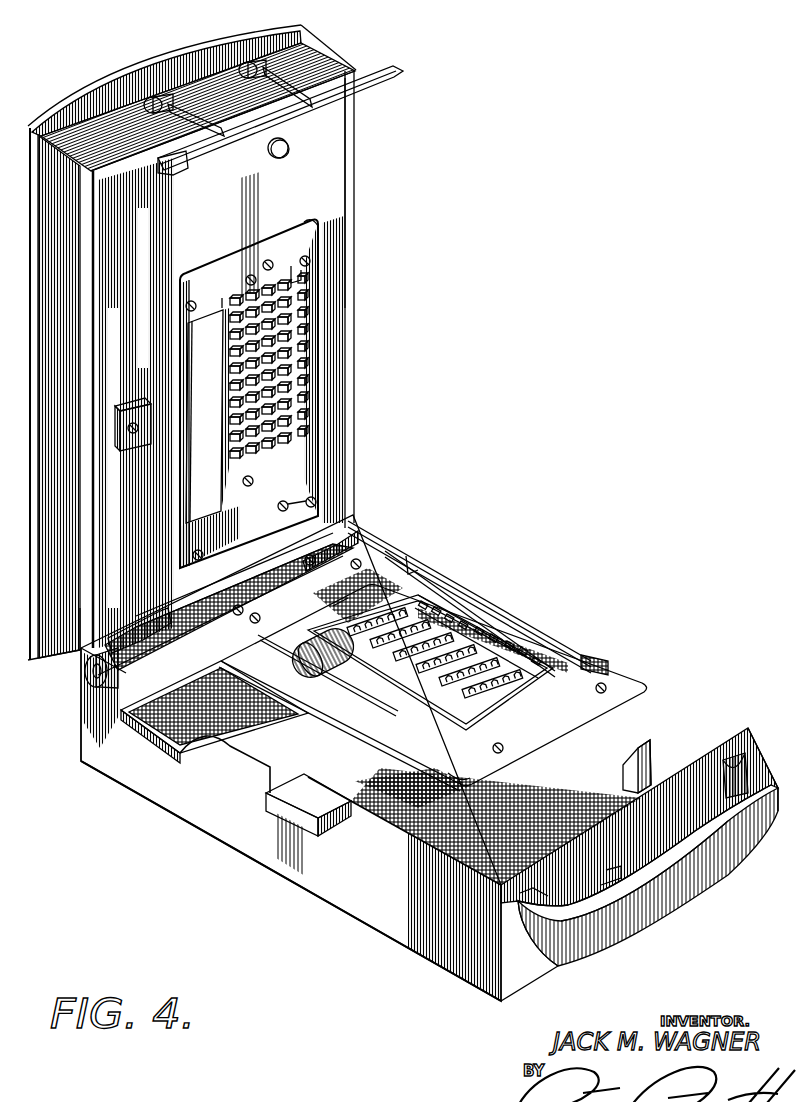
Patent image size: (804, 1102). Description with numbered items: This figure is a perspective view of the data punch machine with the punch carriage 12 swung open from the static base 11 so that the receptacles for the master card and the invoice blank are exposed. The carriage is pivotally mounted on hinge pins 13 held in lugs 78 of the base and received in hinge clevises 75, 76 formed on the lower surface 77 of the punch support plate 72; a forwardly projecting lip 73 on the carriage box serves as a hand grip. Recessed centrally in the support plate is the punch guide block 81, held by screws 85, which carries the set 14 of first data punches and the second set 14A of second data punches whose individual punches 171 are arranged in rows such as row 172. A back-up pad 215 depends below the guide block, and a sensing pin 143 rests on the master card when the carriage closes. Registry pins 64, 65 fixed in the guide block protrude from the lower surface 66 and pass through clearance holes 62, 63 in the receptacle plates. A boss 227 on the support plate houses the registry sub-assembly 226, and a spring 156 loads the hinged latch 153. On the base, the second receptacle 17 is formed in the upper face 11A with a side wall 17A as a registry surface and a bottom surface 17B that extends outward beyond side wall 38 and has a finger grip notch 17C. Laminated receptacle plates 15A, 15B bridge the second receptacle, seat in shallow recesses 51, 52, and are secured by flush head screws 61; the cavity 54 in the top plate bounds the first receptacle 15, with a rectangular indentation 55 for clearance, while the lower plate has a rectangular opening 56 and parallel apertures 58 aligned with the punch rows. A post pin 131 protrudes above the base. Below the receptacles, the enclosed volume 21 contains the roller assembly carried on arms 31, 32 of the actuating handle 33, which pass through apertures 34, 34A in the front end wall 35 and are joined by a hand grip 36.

The static base 11 is at (365, 890).
The upper face of the static base 11A is at (633, 692).
The punch carriage 12 is at (322, 124).
The hinge pins 13 is at (75, 677).
The set of first data punches 14 is at (234, 282).
The second set of second data punches 14A is at (304, 210).
The first receptacle 15 is at (361, 590).
The top receptacle plate 15A is at (563, 667).
The lower receptacle plate 15B is at (398, 580).
The second receptacle 17 is at (200, 700).
The side wall 17A is at (497, 598).
The bottom surface 17B is at (314, 731).
The finger grip notch 17C is at (227, 738).
The enclosed volume 21 is at (430, 712).
The arm 31 is at (546, 895).
The arm 32 is at (752, 777).
The actuating handle 33 is at (648, 877).
The aperture 34 is at (522, 884).
The aperture 34A is at (712, 760).
The front end wall 35 is at (523, 960).
The hand grip 36 is at (670, 905).
The side wall of the base 38 is at (380, 918).
The shallow recess 51 is at (405, 775).
The shallow recess 52 is at (205, 638).
The cavity 54 is at (280, 608).
The rectangular indentation 55 is at (436, 598).
The rectangular opening 56 is at (383, 665).
The parallel rectangular apertures 58 is at (450, 654).
The flush head screws 61 is at (598, 677).
The clearance hole 62 is at (248, 605).
The clearance hole 63 is at (330, 595).
The registry pin 64 is at (307, 491).
The registry pin 65 is at (194, 543).
The lower surface of punch carriage 66 is at (318, 301).
The punch support plate 72 is at (218, 179).
The forwardly projecting lip 73 is at (113, 62).
The hinge clevis 75 is at (87, 635).
The hinge clevis 76 is at (282, 551).
The lower surface of support plate 77 is at (322, 161).
The lugs 78 is at (313, 537).
The punch guide block 81 is at (209, 283).
The screws 85 is at (183, 292).
The post pin 131 is at (614, 766).
The sensing pin 143 is at (259, 252).
The hinged latch 153 is at (396, 67).
The spring 156 is at (298, 682).
The individual punches 171 is at (304, 390).
The row of punches 172 is at (294, 250).
The back-up pad 215 is at (203, 490).
The registry sub-assembly 226 is at (132, 427).
The boss 227 is at (107, 403).